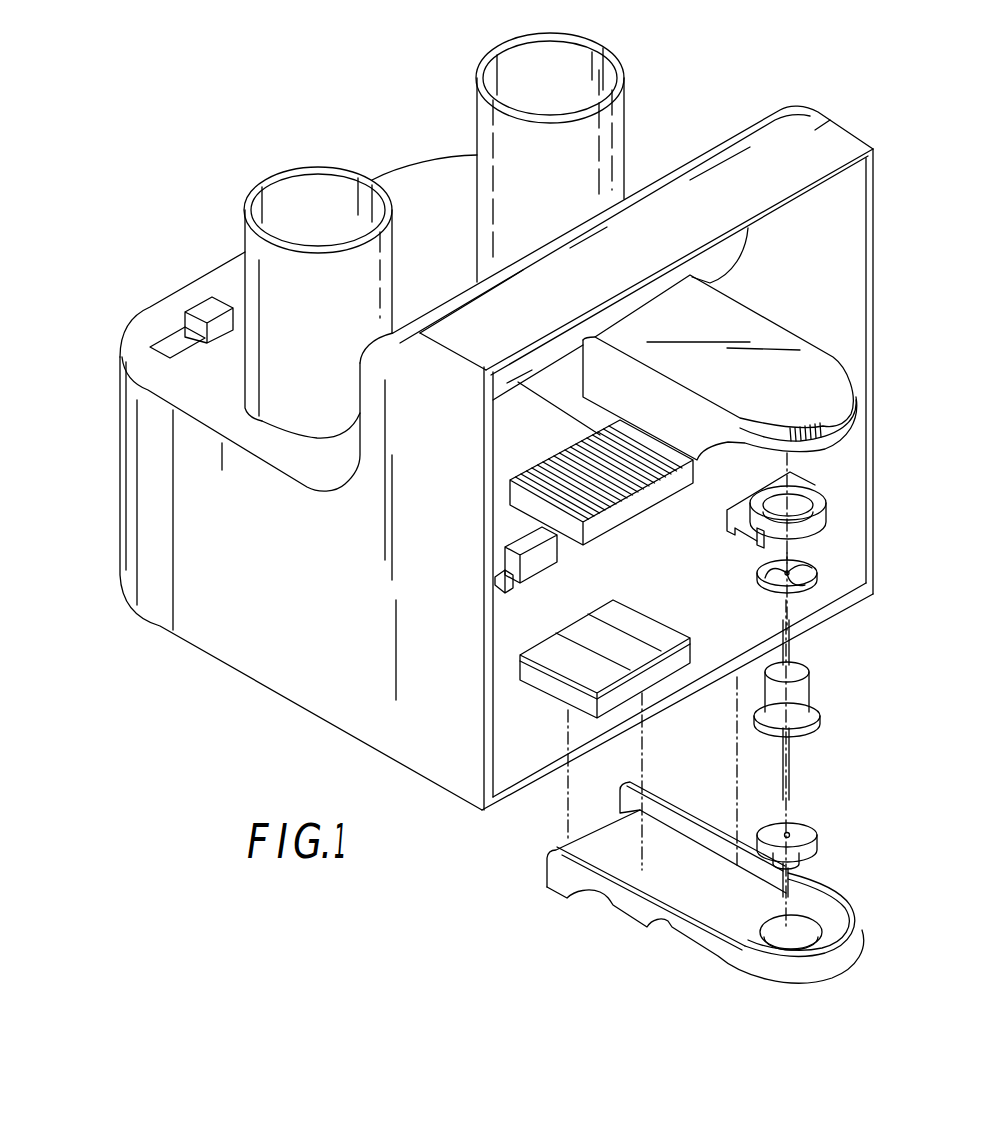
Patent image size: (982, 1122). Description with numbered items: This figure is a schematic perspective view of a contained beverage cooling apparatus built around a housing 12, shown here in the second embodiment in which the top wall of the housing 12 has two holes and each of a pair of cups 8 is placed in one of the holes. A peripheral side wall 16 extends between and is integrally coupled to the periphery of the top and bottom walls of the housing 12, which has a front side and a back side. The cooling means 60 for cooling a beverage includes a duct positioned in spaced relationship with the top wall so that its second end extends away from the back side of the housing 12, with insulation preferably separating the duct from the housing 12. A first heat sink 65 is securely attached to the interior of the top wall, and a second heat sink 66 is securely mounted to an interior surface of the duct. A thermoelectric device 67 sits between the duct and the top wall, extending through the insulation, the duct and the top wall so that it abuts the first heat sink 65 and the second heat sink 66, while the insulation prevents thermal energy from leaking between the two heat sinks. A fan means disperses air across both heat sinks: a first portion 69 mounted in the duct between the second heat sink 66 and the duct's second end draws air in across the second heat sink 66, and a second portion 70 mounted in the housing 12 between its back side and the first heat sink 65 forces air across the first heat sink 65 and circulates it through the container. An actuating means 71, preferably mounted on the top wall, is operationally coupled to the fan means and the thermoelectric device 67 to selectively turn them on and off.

The cups 8 is at (311, 178).
The housing 12 is at (122, 583).
The peripheral side wall 16 is at (180, 462).
The cooling means 60 is at (557, 846).
The first heat sink 65 is at (563, 685).
The second heat sink 66 is at (510, 490).
The thermoelectric device 67 is at (527, 567).
The first portion of the fan means 69 is at (812, 592).
The second portion of the fan means 70 is at (815, 836).
The actuating means 71 is at (168, 337).